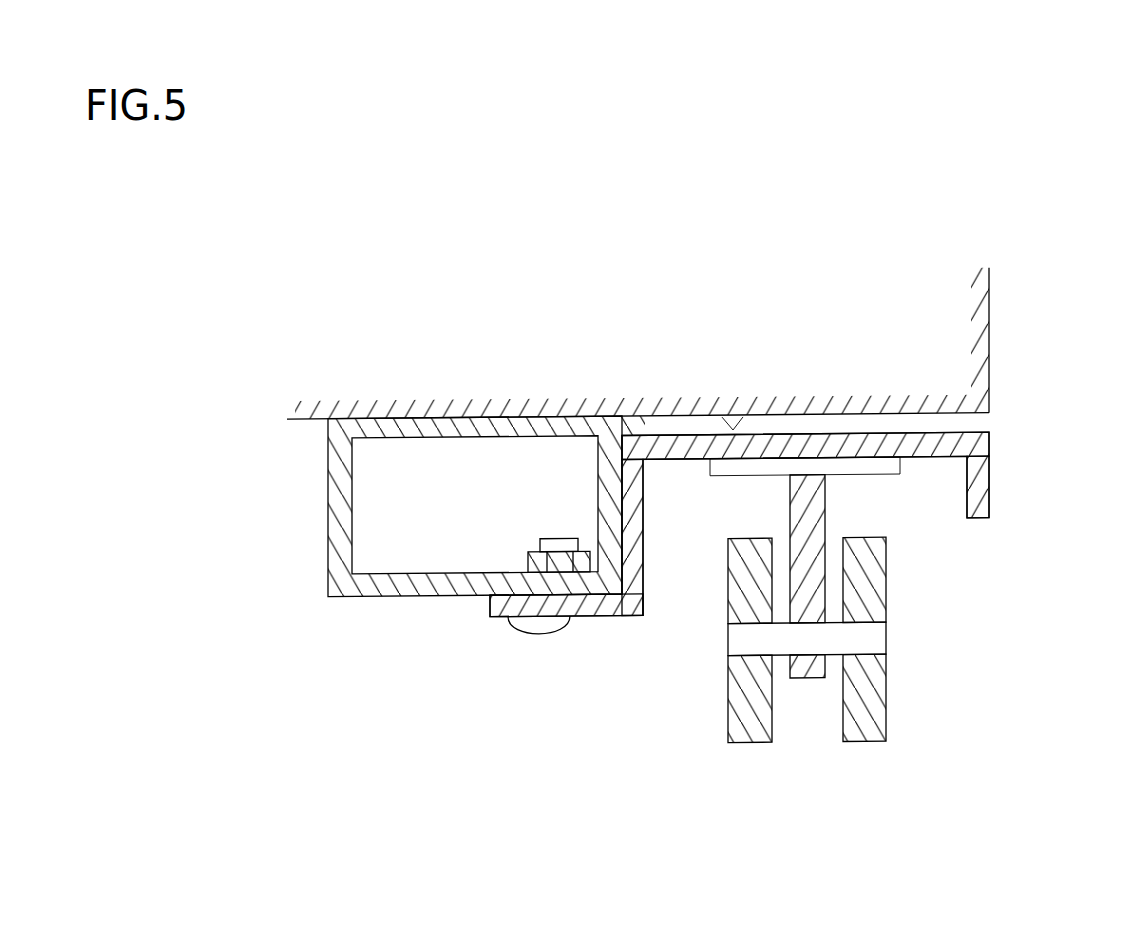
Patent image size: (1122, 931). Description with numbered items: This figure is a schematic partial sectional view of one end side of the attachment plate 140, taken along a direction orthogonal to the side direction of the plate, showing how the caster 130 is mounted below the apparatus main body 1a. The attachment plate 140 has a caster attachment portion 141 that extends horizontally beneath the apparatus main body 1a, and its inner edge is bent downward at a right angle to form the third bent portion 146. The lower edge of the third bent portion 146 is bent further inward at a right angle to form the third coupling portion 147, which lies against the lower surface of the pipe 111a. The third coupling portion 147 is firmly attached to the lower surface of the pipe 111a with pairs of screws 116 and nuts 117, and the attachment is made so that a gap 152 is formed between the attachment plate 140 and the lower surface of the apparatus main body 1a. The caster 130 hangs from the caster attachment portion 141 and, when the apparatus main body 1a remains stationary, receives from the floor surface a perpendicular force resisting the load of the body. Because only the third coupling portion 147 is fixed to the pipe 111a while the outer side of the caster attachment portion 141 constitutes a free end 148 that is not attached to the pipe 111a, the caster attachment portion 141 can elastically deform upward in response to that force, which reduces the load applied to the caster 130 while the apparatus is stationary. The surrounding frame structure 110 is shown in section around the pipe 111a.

The apparatus main body 1a is at (990, 319).
The battery unit 110 is at (419, 550).
The pipe 111a is at (329, 488).
The screw 116 is at (528, 637).
The nut 117 is at (528, 564).
The caster 130 is at (887, 605).
The attachment plate 140 is at (783, 440).
The caster attachment portion 141 is at (675, 466).
The third bent portion 146 is at (647, 530).
The third coupling portion 147 is at (610, 620).
The free end 148 is at (990, 489).
The gap 152 is at (725, 426).